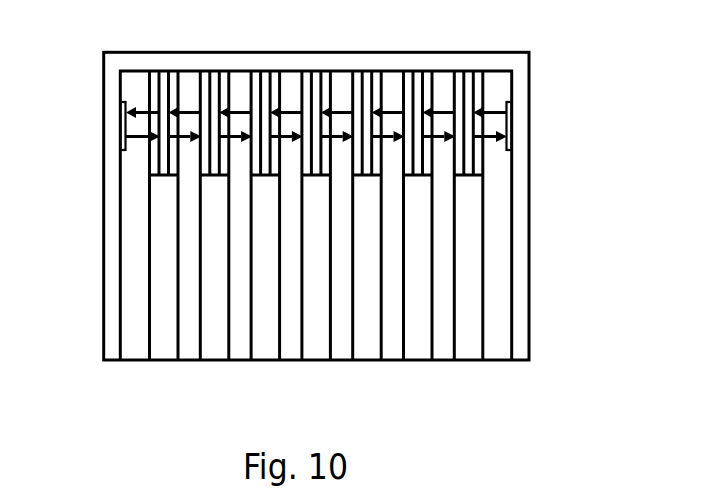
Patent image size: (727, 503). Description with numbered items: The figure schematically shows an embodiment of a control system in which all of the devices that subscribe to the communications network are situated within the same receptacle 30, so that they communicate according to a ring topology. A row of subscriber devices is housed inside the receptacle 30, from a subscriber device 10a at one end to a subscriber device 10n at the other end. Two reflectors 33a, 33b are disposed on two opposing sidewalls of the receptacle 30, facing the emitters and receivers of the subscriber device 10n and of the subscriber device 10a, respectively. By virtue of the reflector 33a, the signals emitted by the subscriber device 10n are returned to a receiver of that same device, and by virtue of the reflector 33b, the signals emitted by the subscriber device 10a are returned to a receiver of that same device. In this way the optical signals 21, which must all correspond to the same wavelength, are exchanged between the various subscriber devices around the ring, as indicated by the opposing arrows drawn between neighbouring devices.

The receptacle 30 is at (190, 52).
The optical signals 21 is at (343, 98).
The subscriber device 10a is at (162, 347).
The subscriber device 10n is at (467, 347).
The reflector 33b is at (126, 150).
The reflector 33a is at (506, 150).